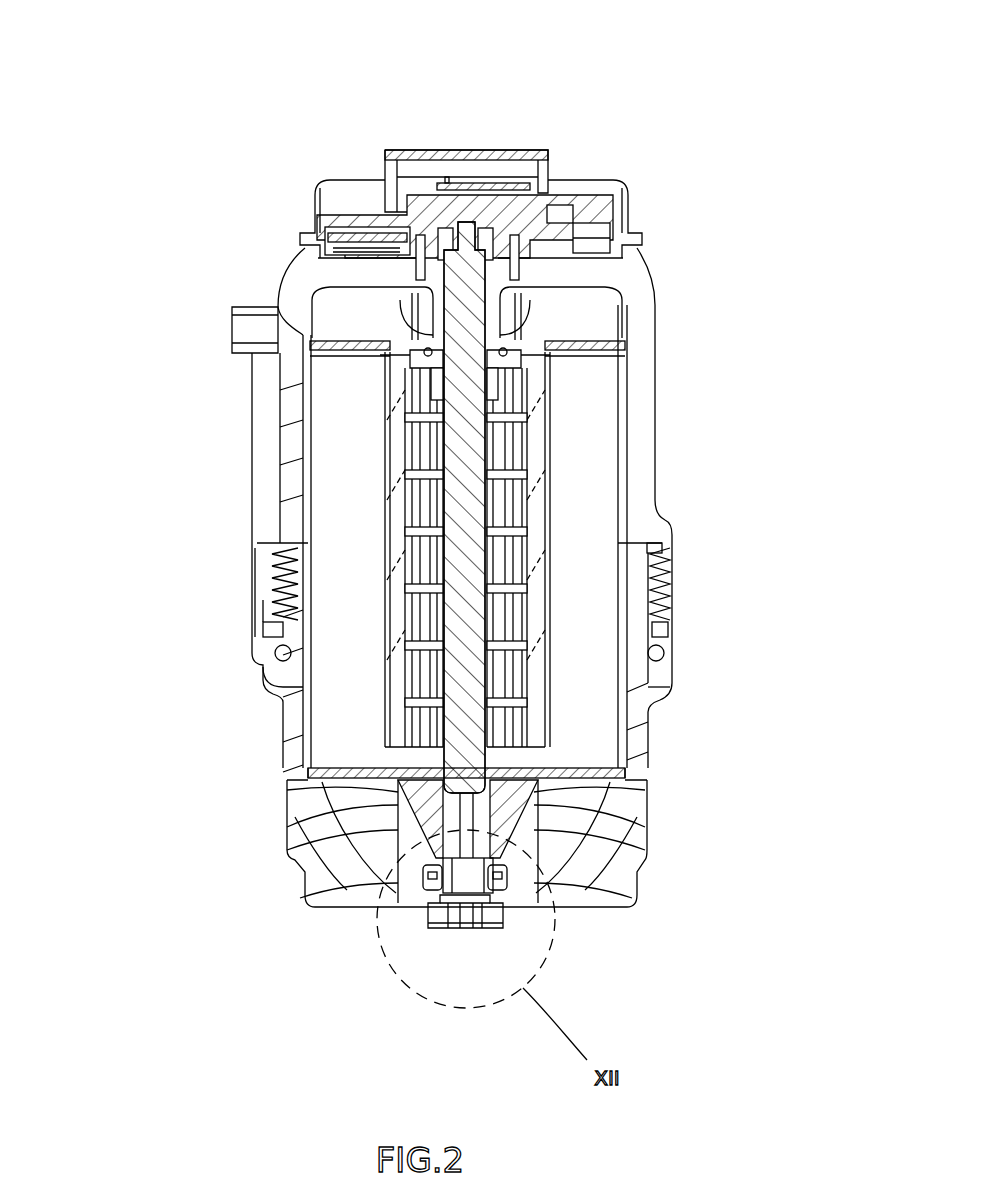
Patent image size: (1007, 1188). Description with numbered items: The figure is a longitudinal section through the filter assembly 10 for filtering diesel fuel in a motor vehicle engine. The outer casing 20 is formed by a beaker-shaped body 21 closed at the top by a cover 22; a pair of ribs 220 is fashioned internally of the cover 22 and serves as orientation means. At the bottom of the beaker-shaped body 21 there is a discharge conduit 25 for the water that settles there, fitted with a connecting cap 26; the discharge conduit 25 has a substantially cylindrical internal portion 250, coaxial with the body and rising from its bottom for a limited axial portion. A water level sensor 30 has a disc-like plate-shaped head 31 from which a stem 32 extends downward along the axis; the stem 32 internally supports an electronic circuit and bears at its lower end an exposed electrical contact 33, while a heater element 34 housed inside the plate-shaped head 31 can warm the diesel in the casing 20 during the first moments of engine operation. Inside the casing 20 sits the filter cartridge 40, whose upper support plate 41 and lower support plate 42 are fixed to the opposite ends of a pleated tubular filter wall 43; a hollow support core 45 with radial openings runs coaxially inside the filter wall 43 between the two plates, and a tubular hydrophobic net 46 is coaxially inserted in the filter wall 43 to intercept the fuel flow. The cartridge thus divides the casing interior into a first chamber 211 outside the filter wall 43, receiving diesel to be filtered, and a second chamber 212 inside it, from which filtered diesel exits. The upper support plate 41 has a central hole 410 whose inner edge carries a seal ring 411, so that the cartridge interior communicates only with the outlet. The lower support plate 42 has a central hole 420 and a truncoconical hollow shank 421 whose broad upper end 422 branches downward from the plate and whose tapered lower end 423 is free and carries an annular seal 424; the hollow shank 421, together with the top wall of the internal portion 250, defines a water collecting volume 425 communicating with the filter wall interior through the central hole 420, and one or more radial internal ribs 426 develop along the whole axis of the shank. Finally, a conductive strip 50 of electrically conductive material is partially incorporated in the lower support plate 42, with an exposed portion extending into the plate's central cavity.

The filter assembly 10 is at (140, 115).
The outer casing 20 is at (270, 413).
The beaker-shaped body 21 is at (297, 715).
The cover 22 is at (290, 448).
The discharge conduit 25 is at (473, 930).
The connecting cap 26 is at (440, 928).
The water level sensor 30 is at (552, 165).
The plate-shaped head 31 is at (588, 182).
The stem 32 is at (495, 387).
The exposed electrical contact 33 is at (345, 780).
The heater element 34 is at (378, 245).
The filter cartridge 40 is at (300, 578).
The upper support plate 41 is at (620, 342).
The lower support plate 42 is at (648, 770).
The tubular filter wall 43 is at (590, 490).
The hollow support core 45 is at (672, 603).
The hydrophobic net 46 is at (640, 548).
The conductive strip 50 is at (387, 795).
The first chamber 211 is at (627, 653).
The second chamber 212 is at (640, 593).
The ribs 220 is at (372, 290).
The cylindrical internal portion 250 is at (410, 880).
The central hole 410 is at (603, 266).
The seal ring 411 is at (620, 358).
The central hole 420 is at (630, 765).
The hollow shank 421 is at (620, 850).
The upper end 422 is at (590, 823).
The lower end 423 is at (547, 903).
The annular seal 424 is at (557, 910).
The collecting volume 425 is at (430, 880).
The radial internal ribs 426 is at (430, 862).